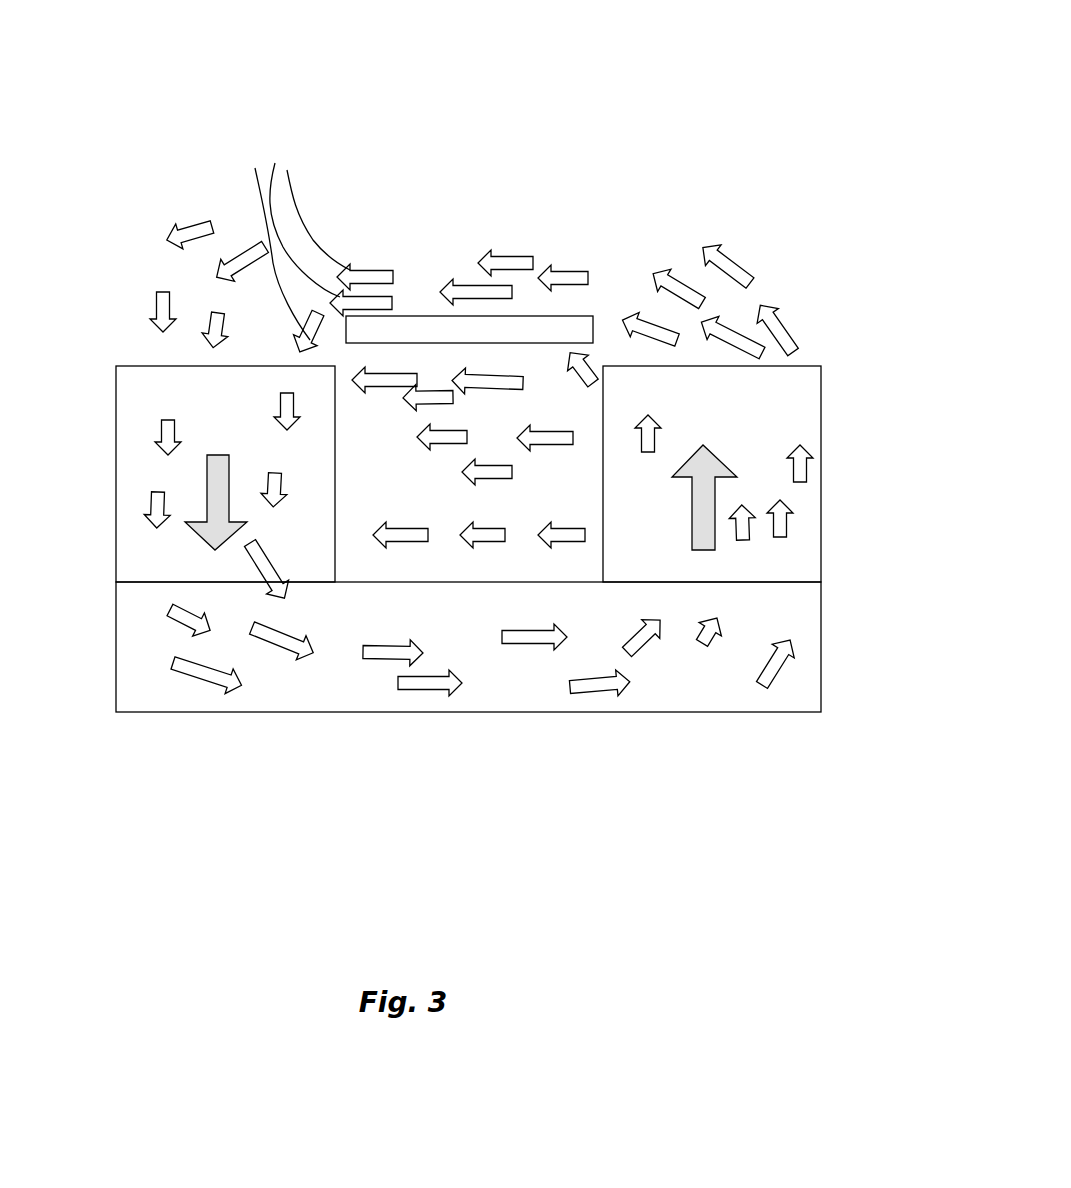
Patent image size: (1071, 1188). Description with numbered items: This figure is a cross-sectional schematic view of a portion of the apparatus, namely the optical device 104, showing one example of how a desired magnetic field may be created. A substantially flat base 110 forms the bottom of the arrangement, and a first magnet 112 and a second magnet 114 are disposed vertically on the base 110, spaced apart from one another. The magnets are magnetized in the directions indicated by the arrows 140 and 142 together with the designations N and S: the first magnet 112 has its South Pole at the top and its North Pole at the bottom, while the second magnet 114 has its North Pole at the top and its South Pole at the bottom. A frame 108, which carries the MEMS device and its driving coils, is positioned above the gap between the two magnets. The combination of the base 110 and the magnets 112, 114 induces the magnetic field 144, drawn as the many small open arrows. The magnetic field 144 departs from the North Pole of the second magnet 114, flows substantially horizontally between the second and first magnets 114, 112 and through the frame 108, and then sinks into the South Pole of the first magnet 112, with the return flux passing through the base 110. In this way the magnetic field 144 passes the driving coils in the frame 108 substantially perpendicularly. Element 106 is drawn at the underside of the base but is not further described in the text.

The optical device 104 is at (593, 100).
The yoke / base plate 106 is at (575, 722).
The frame 108 is at (586, 305).
The substantially flat base 110 is at (268, 665).
The first magnet 112 is at (181, 566).
The second magnet 114 is at (748, 558).
The magnetization direction of first magnet 140 is at (215, 522).
The magnetization direction of second magnet 142 is at (705, 500).
The magnetic field 144 is at (477, 249).